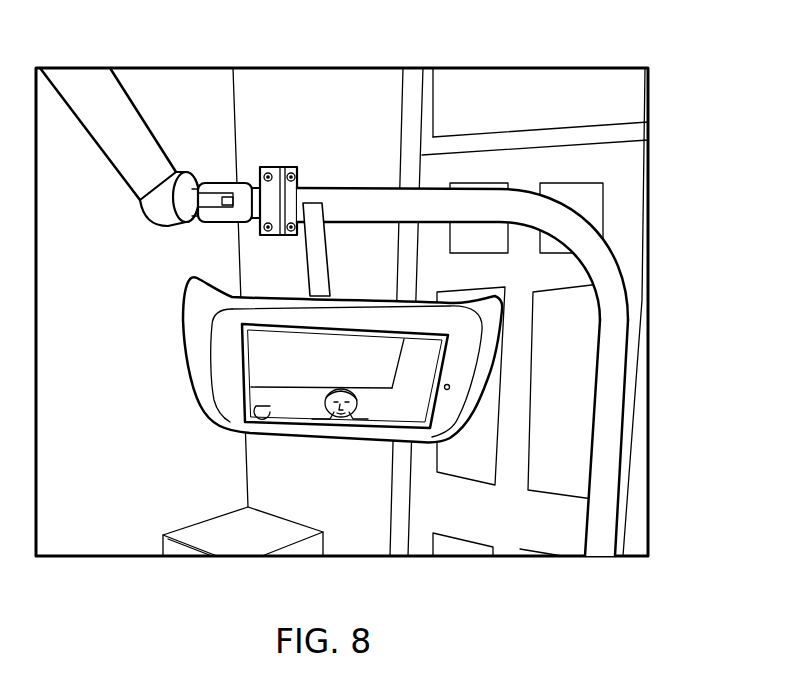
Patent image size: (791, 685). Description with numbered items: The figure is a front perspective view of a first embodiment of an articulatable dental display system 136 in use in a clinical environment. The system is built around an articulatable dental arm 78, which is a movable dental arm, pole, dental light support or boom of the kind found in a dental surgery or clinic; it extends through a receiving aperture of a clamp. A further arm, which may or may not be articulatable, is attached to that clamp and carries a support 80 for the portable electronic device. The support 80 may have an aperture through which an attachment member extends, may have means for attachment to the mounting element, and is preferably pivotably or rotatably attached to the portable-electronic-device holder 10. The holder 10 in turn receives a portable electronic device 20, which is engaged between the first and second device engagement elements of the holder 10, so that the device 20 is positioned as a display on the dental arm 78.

The articulatable dental arm 78 is at (407, 188).
The support 80 is at (315, 243).
The portable-electronic-device holder 10 is at (207, 383).
The portable electronic device 20 is at (400, 412).
The articulatable dental display system 136 is at (634, 287).